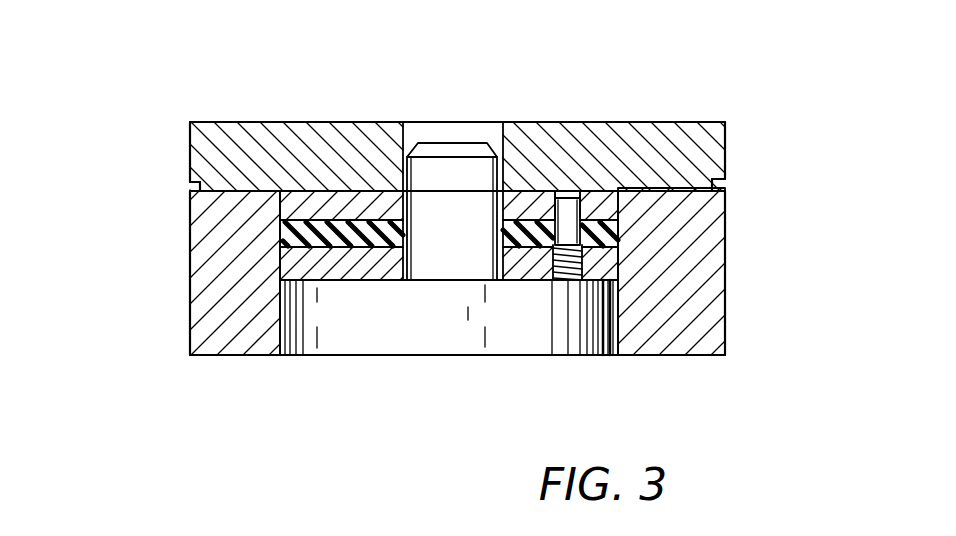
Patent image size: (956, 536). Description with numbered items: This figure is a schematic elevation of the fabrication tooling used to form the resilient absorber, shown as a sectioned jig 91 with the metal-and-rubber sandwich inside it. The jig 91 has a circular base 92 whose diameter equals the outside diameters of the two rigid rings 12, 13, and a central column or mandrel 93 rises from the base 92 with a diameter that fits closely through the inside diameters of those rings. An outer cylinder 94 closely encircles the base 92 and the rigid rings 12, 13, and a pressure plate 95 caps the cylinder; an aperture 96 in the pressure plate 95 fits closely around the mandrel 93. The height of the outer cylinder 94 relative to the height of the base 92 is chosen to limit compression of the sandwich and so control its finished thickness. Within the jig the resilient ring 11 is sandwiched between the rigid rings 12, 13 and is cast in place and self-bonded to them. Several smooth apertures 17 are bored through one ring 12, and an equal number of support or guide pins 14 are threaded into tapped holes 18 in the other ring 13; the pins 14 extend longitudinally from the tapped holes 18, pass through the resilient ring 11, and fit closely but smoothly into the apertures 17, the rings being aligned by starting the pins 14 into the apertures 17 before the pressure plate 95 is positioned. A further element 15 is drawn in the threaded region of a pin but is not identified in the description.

The jig 91 is at (170, 90).
The circular base 92 is at (393, 335).
The mandrel 93 is at (460, 175).
The outer cylinder 94 is at (725, 200).
The pressure plate 95 is at (703, 147).
The aperture 96 is at (419, 124).
The resilient ring 11 is at (290, 237).
The rigid ring 12 is at (300, 210).
The rigid ring 13 is at (303, 262).
The support pins 14 is at (580, 215).
The threaded portion 15 is at (585, 262).
The smooth apertures 17 is at (558, 195).
The tapped holes 18 is at (558, 283).